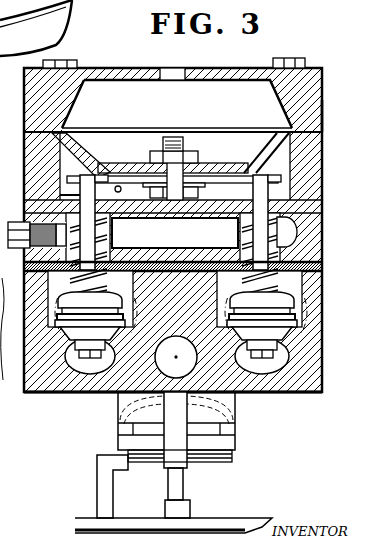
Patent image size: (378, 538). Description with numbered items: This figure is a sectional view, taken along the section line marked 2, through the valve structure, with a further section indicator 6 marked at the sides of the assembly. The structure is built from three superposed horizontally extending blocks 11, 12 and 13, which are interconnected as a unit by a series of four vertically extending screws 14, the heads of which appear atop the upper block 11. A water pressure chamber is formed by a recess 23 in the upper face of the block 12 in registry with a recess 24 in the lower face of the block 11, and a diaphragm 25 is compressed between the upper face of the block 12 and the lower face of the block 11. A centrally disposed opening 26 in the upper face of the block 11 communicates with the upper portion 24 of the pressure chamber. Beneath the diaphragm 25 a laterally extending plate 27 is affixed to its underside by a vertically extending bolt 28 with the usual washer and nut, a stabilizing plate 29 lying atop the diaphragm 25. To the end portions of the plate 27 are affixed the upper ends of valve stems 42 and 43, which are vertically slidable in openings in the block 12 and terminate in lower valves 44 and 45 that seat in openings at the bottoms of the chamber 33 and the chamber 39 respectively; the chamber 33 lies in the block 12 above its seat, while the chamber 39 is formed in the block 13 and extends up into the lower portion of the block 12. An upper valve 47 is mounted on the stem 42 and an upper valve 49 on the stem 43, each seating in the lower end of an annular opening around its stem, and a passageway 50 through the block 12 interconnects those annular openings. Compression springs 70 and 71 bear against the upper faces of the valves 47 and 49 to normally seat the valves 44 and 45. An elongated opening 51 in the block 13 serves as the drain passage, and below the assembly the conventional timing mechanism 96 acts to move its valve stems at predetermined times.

The section line 2 is at (115, 16).
The section line 6- 6 is at (21, 326).
The block 11 is at (318, 90).
The block 12 is at (318, 200).
The block 13 is at (320, 385).
The screw 14 is at (66, 64).
The recess 23 is at (284, 160).
The recess 24 is at (243, 80).
The diaphragm 25 is at (322, 118).
The opening 26 is at (172, 83).
The plate 27 is at (115, 173).
The bolt 28 is at (178, 138).
The stabilizing plate 29 is at (219, 170).
The chamber 33 is at (77, 319).
The chamber 39 is at (188, 261).
The valve stem 42 is at (42, 166).
The valve stem 43 is at (175, 233).
The lower valve 44 is at (41, 394).
The lower valve 45 is at (292, 332).
The upper valve 47 is at (134, 307).
The upper valve 49 is at (298, 292).
The passageway 50 is at (167, 242).
The elongated opening 51 is at (118, 395).
The compression spring 70 is at (42, 209).
The compression spring 71 is at (282, 233).
The timing mechanism 96 is at (251, 508).